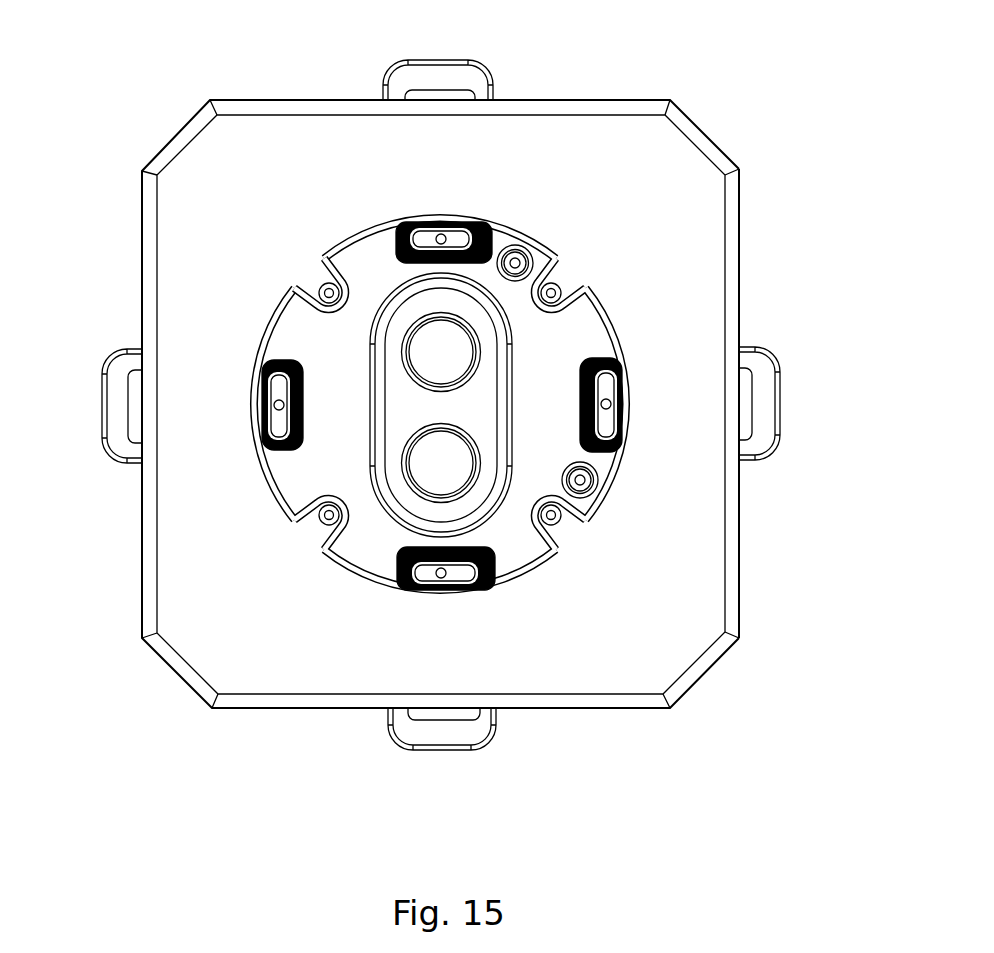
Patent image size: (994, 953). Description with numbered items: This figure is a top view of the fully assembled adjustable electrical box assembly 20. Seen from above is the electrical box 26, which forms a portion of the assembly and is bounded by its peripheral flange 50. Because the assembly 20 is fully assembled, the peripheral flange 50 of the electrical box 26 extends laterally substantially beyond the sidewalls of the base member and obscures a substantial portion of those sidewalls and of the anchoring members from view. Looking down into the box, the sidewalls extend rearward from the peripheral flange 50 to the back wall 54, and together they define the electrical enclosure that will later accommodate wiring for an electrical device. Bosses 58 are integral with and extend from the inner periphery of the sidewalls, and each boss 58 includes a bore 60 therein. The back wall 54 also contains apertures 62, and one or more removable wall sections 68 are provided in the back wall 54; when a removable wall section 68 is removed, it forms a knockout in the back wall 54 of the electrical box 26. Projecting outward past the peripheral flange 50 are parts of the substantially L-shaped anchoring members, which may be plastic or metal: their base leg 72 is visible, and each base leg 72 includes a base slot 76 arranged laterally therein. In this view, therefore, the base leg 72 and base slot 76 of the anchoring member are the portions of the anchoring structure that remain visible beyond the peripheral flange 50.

The adjustable electrical box assembly 20 is at (112, 89).
The electrical box 26 is at (740, 250).
The peripheral flange 50 is at (623, 195).
The back wall 54 is at (356, 394).
The boss 58 is at (312, 302).
The bore 60 is at (323, 287).
The aperture 62 is at (618, 404).
The removable wall section 68 is at (458, 364).
The base leg 72 is at (780, 385).
The base slot 76 is at (752, 403).